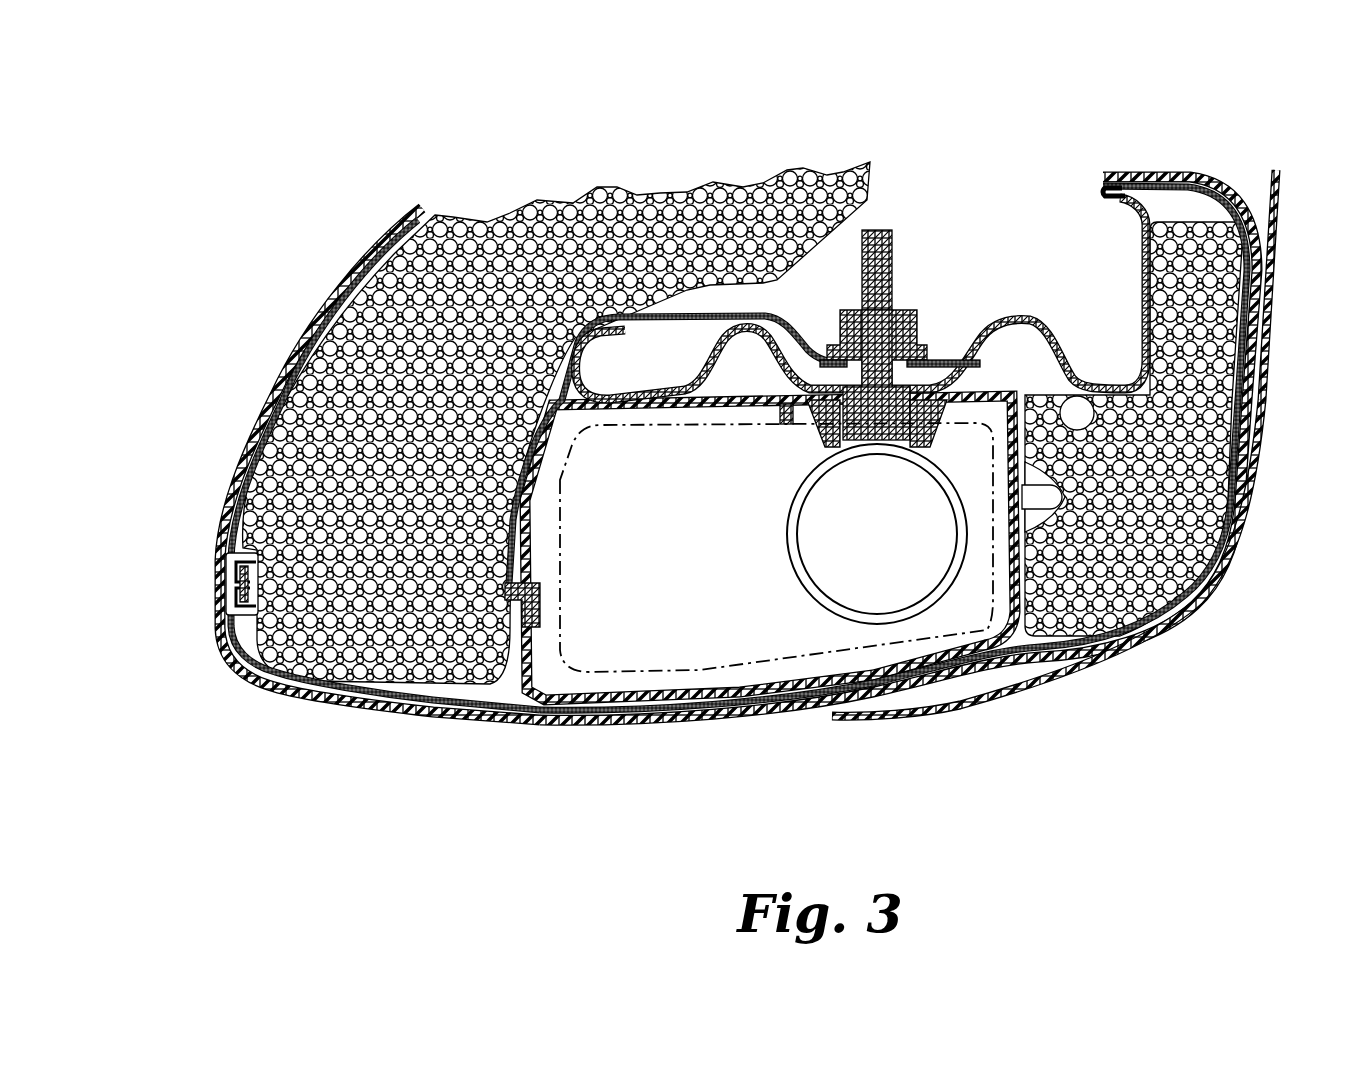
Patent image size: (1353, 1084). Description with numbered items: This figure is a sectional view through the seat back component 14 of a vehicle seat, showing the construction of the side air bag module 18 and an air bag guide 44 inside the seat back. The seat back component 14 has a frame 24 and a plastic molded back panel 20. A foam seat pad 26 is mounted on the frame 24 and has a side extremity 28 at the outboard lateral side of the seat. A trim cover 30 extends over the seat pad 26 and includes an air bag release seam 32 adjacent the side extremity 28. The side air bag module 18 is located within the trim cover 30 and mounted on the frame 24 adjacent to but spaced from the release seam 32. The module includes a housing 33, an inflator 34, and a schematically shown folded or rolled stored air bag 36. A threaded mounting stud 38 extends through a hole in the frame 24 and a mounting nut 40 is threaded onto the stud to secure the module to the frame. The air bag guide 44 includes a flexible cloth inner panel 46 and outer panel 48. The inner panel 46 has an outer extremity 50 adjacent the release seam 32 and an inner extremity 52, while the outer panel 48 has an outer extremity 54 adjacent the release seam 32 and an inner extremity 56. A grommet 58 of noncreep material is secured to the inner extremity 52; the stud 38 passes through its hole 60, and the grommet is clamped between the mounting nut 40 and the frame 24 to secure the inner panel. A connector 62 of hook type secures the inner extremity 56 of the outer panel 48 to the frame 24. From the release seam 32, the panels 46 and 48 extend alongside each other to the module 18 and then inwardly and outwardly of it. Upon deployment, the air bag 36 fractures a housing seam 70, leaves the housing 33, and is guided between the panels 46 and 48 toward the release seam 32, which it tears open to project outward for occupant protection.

The seat back component 14 is at (238, 354).
The side air bag module 18 is at (1033, 637).
The back panel 20 is at (1203, 600).
The frame 24 is at (1048, 318).
The foam seat pad 26 is at (482, 240).
The side extremity 28 is at (427, 670).
The trim cover 30 is at (313, 323).
The air bag release seam 32 is at (205, 594).
The housing 33 is at (653, 697).
The inflator 34 is at (800, 575).
The air bag 36 is at (593, 680).
The threaded mounting stud 38 is at (855, 305).
The mounting nut 40 is at (930, 352).
The air bag guide 44 is at (313, 682).
The inner panel 46 is at (688, 312).
The outer panel 48 is at (485, 718).
The outer extremity 50 is at (260, 613).
The inner extremity 52 is at (947, 372).
The outer extremity 54 is at (240, 673).
The inner extremity 56 is at (1137, 175).
The grommet 58 is at (947, 366).
The hole 60 is at (872, 312).
The connector 62 is at (1100, 188).
The housing seam 70 is at (537, 695).